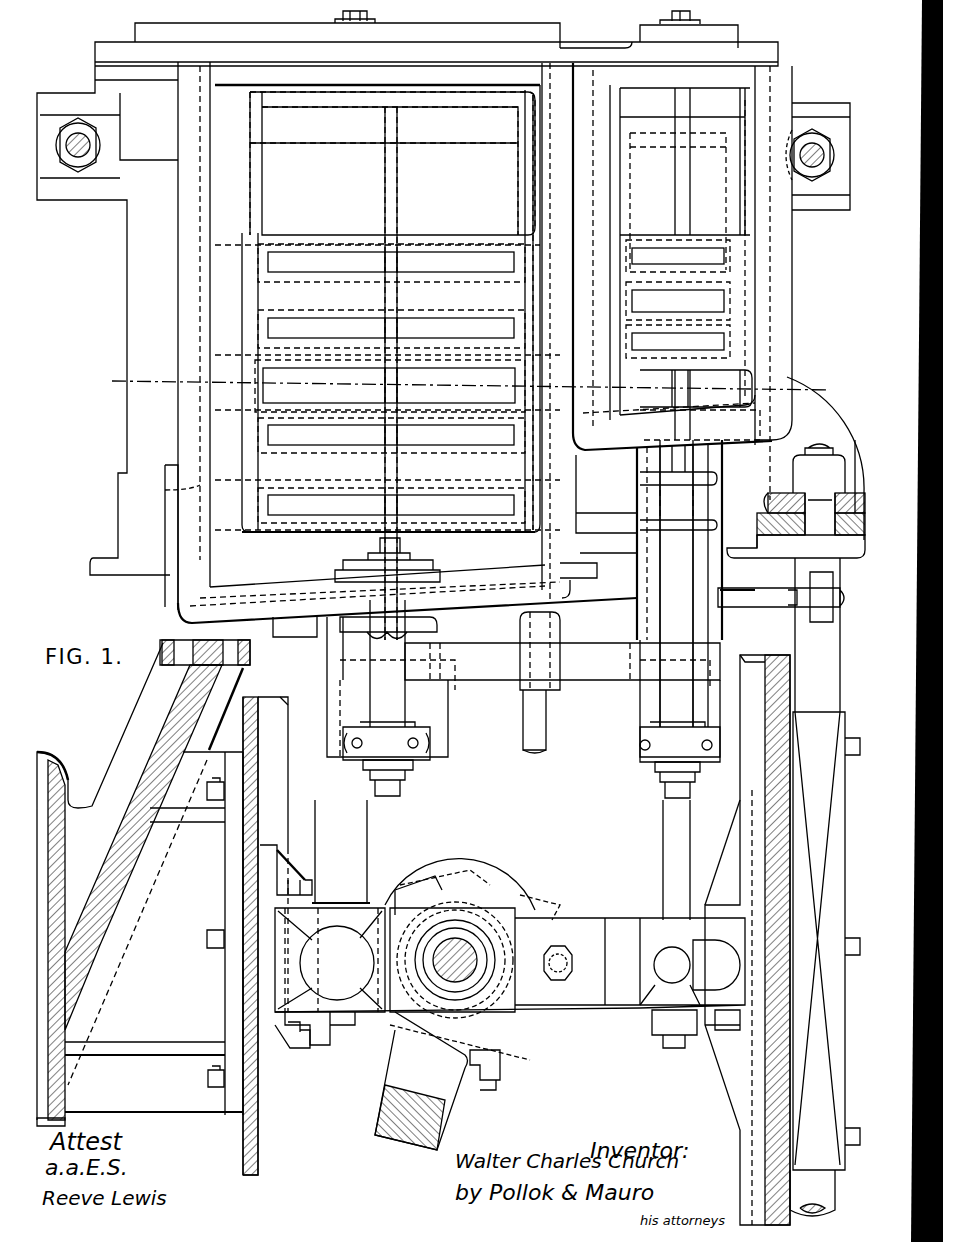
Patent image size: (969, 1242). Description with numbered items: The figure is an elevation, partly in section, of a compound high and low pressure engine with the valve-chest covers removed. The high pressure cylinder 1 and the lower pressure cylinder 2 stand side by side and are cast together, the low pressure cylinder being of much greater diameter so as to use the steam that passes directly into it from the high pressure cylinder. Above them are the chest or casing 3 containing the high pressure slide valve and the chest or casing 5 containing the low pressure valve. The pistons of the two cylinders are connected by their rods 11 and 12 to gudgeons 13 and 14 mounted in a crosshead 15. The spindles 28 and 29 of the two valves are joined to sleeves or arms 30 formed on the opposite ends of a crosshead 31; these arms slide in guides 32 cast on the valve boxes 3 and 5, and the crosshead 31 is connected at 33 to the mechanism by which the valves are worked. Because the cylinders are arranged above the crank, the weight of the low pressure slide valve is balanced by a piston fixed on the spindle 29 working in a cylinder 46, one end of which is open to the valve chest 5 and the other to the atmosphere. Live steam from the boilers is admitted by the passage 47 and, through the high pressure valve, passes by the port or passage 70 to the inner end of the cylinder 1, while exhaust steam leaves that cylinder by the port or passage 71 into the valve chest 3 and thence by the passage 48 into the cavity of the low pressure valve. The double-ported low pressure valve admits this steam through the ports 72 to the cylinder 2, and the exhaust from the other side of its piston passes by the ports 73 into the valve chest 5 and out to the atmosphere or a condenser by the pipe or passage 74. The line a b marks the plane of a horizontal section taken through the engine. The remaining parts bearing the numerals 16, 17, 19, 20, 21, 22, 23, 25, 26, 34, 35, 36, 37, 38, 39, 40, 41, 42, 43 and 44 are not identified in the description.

The high pressure cylinder 1 is at (740, 460).
The lower pressure cylinder 2 is at (142, 320).
The valve chest or casing 3 is at (737, 228).
The valve chest or casing 5 is at (222, 268).
The piston rod 11 is at (672, 850).
The piston rod 12 is at (341, 851).
The gudgeon 13 is at (652, 983).
The gudgeon 14 is at (330, 976).
The crosshead 15 is at (575, 922).
The slot 16 is at (700, 988).
The pin 17 is at (637, 980).
The bolt 19 is at (558, 978).
The shaft 20 is at (455, 960).
The clip 21 is at (265, 1048).
The bracket 22 is at (753, 1037).
The side plate 23 is at (265, 936).
The hub 25 is at (478, 925).
The arm 26 is at (440, 1078).
The valve spindle 28 is at (690, 190).
The valve spindle 29 is at (380, 546).
The sleeves or arms 30 is at (523, 680).
The crosshead 31 is at (562, 661).
The guides 32 is at (531, 760).
The connection point 33 is at (540, 682).
The plate 34 is at (605, 600).
The rod 35 is at (789, 887).
The bracket 36 is at (176, 619).
The gusset bracket 37 is at (140, 884).
The bolt shaft 38 is at (820, 514).
The washer block 39 is at (850, 556).
The plate 40 is at (792, 548).
The washer 41 is at (778, 500).
The pin 42 is at (849, 460).
The bolt head 43 is at (818, 470).
The base plate 44 is at (796, 546).
The balancing cylinder 46 is at (355, 626).
The steam admission passage 47 is at (783, 297).
The exhaust passage 48 is at (390, 386).
The port or passage 70 is at (650, 256).
The port or passage 71 is at (662, 350).
The port 72 is at (310, 252).
The port 73 is at (391, 500).
The exhaust pipe or passage 74 is at (172, 525).
The section line a is at (459, 382).
The section line b is at (810, 390).